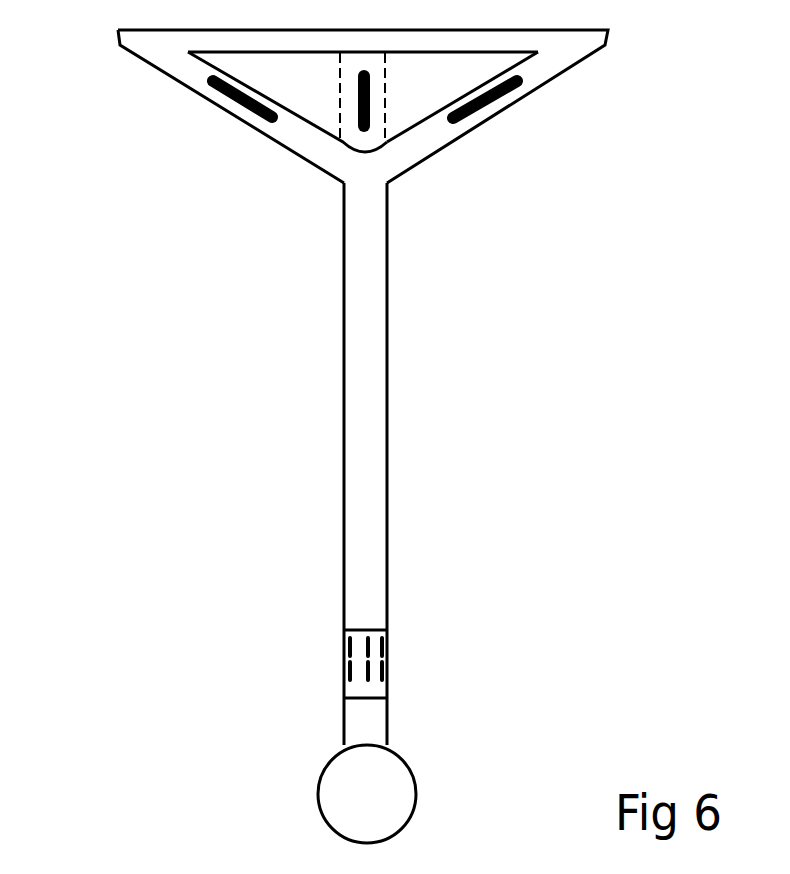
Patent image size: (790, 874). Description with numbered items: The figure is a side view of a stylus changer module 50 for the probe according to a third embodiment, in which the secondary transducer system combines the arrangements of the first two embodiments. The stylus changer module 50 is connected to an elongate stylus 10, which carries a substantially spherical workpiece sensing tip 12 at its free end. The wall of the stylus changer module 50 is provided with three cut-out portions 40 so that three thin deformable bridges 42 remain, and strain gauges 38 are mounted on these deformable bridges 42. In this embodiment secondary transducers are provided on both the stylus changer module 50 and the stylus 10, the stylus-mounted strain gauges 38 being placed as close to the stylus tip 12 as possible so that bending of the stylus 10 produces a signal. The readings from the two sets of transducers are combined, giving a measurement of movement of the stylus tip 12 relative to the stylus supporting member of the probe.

The stylus 10 is at (382, 595).
The workpiece sensing tip 12 is at (395, 815).
The strain gauges 38 is at (252, 113).
The cut-out portions 40 is at (407, 107).
The deformable bridges 42 is at (537, 70).
The stylus changer module 50 is at (130, 62).